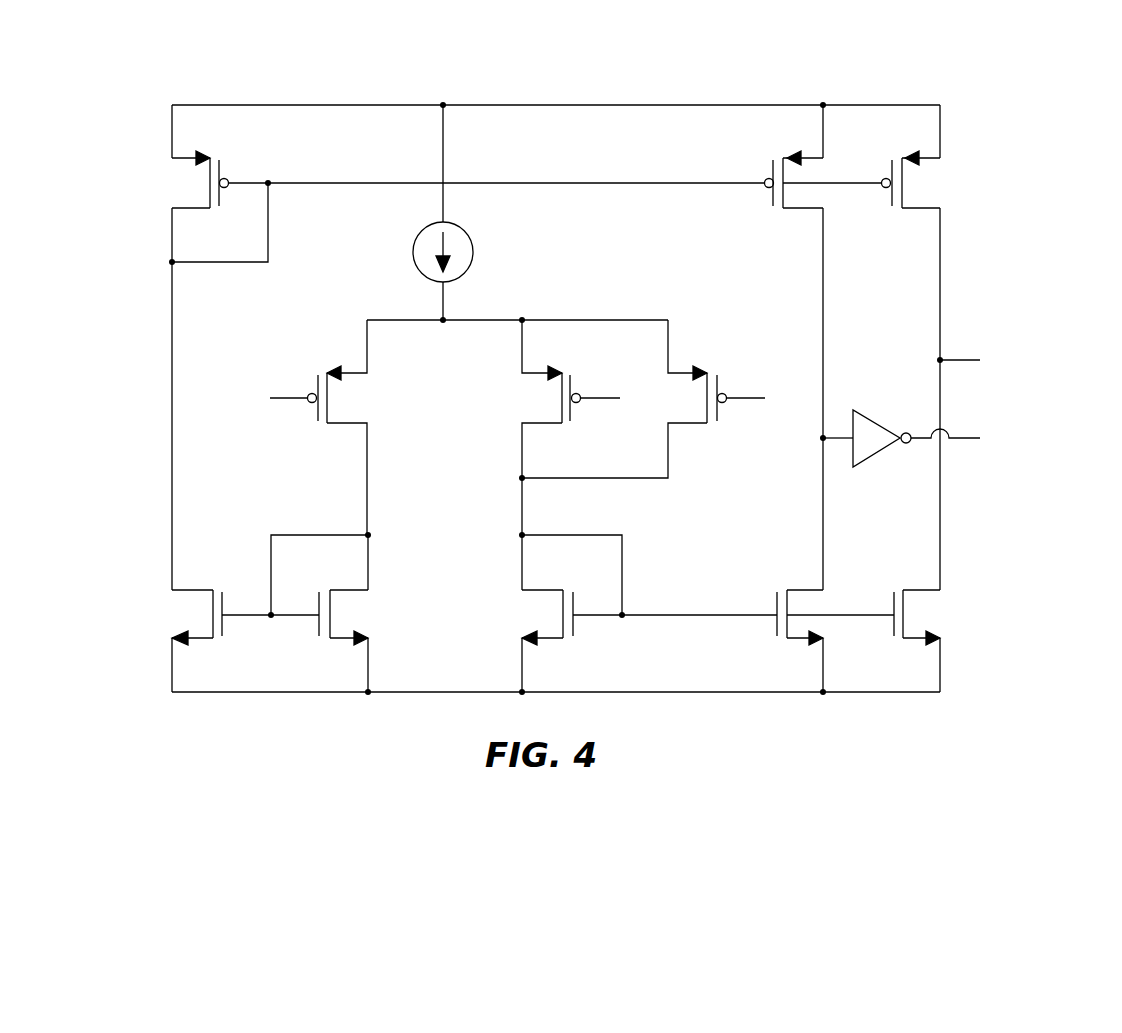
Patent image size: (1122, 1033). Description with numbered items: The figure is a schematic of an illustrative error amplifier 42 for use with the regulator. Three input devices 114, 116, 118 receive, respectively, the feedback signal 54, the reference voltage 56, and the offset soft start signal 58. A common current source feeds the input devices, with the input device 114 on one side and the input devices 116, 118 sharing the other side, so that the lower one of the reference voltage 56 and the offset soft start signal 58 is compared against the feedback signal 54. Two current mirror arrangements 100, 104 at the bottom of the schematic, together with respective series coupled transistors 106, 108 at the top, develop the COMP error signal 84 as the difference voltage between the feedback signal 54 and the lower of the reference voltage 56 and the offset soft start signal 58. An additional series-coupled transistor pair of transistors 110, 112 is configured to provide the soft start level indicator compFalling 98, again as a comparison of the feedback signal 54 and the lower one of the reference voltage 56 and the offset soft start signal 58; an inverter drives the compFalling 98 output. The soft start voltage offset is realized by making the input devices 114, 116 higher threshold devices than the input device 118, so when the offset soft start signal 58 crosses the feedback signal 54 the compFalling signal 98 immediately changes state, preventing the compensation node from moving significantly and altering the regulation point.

The error amplifier 42 is at (898, 64).
The feedback signal 54 is at (288, 404).
The reference voltage 56 is at (593, 403).
The offset soft start signal 58 is at (752, 395).
The COMP error signal 84 is at (965, 358).
The compFalling signal 98 is at (972, 447).
The current mirror arrangement 100 is at (193, 617).
The current mirror arrangement 104 is at (543, 615).
The series coupled transistor 106 is at (190, 184).
The series coupled transistor 108 is at (918, 185).
The transistor 110 is at (805, 175).
The transistor 112 is at (805, 605).
The input device 114 is at (348, 399).
The input device 116 is at (542, 395).
The input device 118 is at (692, 398).